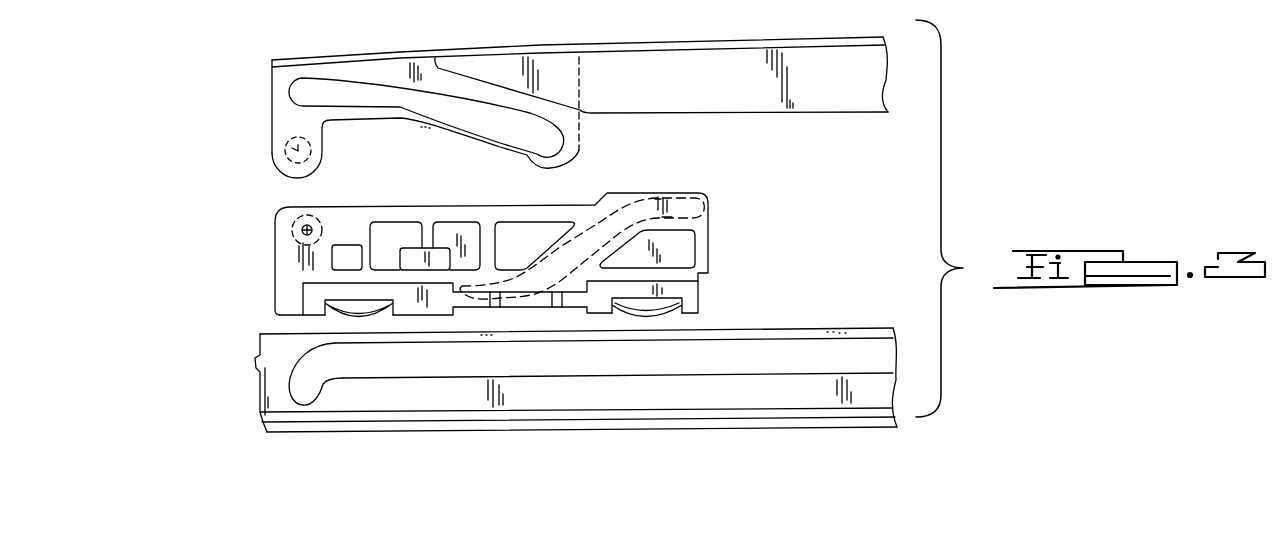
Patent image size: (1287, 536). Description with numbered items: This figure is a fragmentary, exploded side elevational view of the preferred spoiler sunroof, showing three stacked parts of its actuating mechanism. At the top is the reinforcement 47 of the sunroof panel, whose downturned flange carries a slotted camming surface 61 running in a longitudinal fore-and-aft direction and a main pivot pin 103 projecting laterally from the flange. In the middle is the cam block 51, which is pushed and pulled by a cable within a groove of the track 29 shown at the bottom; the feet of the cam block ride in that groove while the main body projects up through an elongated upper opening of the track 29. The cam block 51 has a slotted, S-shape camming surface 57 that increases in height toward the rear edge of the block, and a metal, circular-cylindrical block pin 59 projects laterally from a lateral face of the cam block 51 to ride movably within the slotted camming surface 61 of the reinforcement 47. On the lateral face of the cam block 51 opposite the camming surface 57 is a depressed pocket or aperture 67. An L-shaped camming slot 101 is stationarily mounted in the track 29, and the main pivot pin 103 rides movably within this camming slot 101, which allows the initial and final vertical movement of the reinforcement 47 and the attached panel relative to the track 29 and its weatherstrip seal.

The track 29 is at (265, 426).
The reinforcement 47 is at (830, 100).
The cam block 51 is at (280, 275).
The slotted, S-shape camming surface 57 is at (681, 205).
The block pin 59 is at (280, 228).
The slotted camming surface 61 is at (374, 87).
The depressed pocket or aperture 67 is at (410, 252).
The L-shaped camming slot 101 is at (382, 371).
The main pivot pin 103 is at (286, 147).